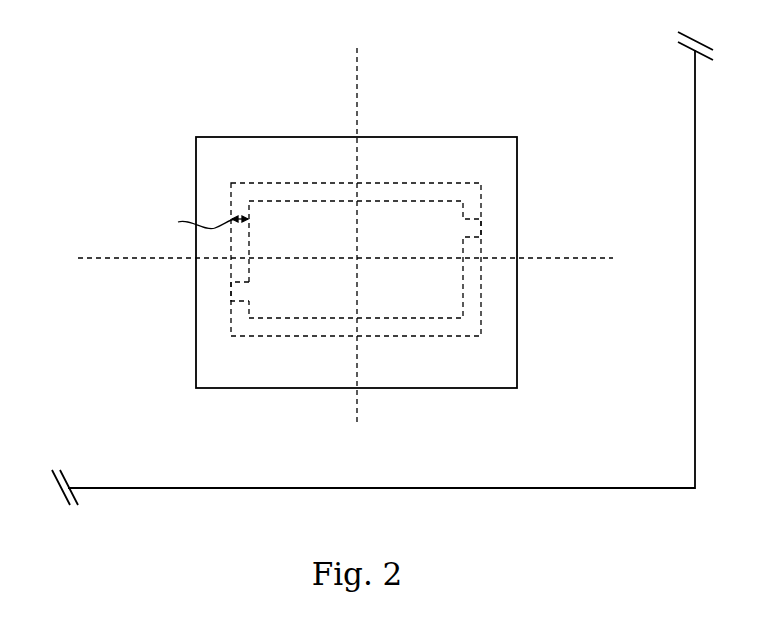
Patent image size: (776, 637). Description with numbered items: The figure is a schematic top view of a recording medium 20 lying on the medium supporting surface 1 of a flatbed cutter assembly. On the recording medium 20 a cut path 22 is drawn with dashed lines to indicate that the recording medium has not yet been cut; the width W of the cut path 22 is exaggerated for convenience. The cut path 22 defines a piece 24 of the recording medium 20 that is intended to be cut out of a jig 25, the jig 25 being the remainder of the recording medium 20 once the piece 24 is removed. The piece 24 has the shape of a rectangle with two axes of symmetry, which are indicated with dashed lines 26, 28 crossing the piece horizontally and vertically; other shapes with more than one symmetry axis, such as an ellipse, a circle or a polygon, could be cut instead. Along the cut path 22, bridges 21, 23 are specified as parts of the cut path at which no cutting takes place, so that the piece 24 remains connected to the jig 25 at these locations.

The medium supporting surface 1 is at (668, 413).
The recording medium 20 is at (475, 137).
The bridge 21 is at (360, 259).
The cut path 22 is at (368, 236).
The bridge 23 is at (235, 290).
The piece 24 is at (428, 288).
The jig 25 is at (500, 188).
The axis of symmetry 26 is at (92, 257).
The axis of symmetry 28 is at (355, 413).